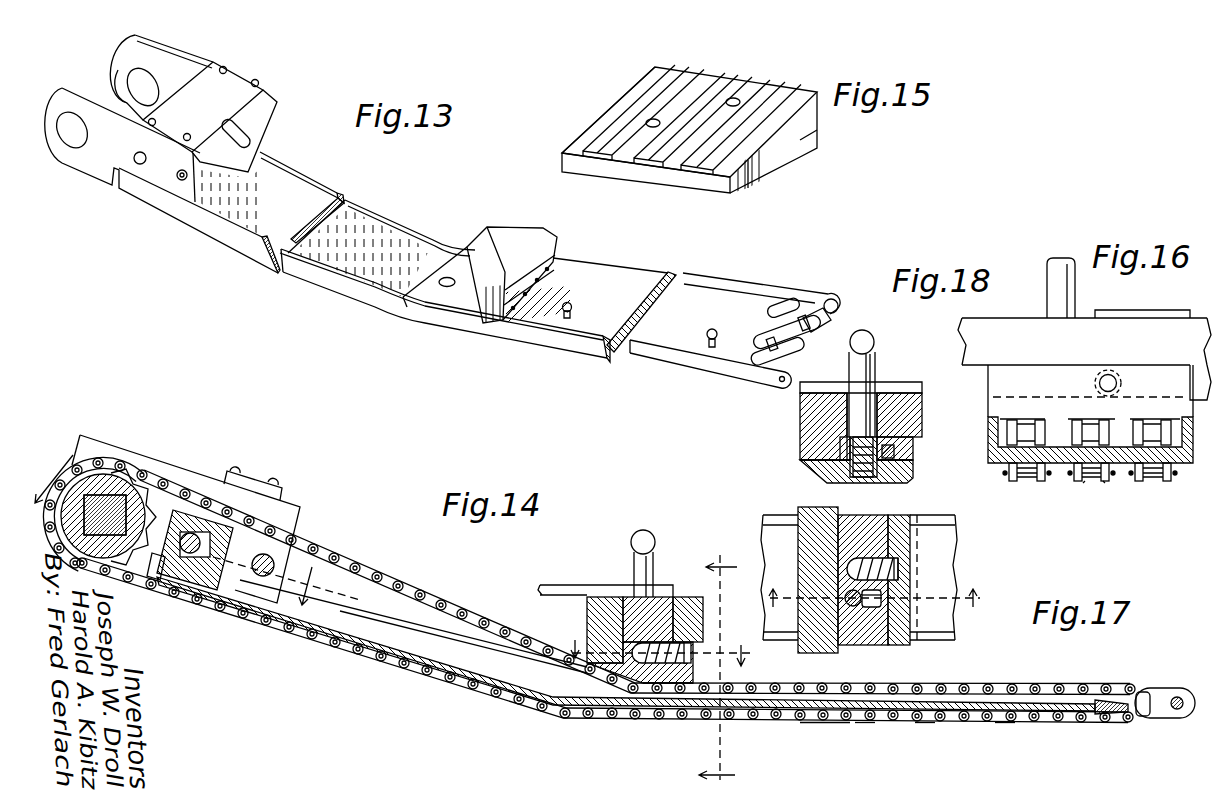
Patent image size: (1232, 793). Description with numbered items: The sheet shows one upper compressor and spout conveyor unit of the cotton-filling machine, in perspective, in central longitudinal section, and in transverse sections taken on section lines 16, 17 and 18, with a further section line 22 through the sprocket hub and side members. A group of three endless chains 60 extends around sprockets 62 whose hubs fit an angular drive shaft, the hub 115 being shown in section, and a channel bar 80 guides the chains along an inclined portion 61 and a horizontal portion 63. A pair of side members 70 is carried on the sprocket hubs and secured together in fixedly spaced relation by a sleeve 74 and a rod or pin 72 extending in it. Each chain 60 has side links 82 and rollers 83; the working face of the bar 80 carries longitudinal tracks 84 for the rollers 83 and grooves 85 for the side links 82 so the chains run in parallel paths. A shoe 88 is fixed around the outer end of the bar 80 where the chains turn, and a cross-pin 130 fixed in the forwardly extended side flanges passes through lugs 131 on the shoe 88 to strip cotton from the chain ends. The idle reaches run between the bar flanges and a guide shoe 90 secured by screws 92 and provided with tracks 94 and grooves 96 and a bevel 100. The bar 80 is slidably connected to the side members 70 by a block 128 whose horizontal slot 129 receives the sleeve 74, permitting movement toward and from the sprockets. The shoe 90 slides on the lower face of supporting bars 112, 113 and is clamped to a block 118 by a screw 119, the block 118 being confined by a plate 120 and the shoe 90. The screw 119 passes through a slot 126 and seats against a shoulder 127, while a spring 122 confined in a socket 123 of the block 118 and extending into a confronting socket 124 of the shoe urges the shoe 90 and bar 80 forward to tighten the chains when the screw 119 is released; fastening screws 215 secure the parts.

In FIG. 14, the section line 16- 16 is at (718, 663).
In FIG. 14, the section line 17- 17 is at (662, 651).
In FIG. 17, the section line 18- 18 is at (872, 600).
In FIG. 14, the section line 22- 22 is at (185, 530).
In FIG. 14, the endless chains 60 is at (395, 582).
In FIG. 13, the inclined portion 61 is at (393, 243).
In FIG. 14, the inclined portion 61 is at (345, 650).
In FIG. 14, the sprockets 62 is at (103, 475).
In FIG. 13, the horizontal portion 63 is at (647, 298).
In FIG. 14, the horizontal portion 63 is at (827, 722).
In FIG. 13, the side members 70 is at (278, 102).
In FIG. 14, the side members 70 is at (288, 505).
In FIG. 14, the pivot pin 72 is at (193, 533).
In FIG. 13, the sleeve 74 is at (250, 140).
In FIG. 14, the sleeve 74 is at (274, 559).
In FIG. 13, the channel bar 80 is at (362, 325).
In FIG. 16, the channel bar 80 is at (1012, 318).
In FIG. 14, the channel bar 80 is at (451, 665).
In FIG. 16, the side links 82 is at (1110, 427).
In FIG. 14, the side links 82 is at (863, 723).
In FIG. 16, the rollers 83 is at (1091, 478).
In FIG. 14, the rollers 83 is at (1003, 725).
In FIG. 16, the longitudinal tracks 84 is at (1026, 464).
In FIG. 16, the grooves 85 is at (1011, 464).
In FIG. 14, the grooves 85 is at (927, 725).
In FIG. 13, the shoe 88 is at (782, 305).
In FIG. 14, the shoe 88 is at (1133, 690).
In FIG. 13, the guide shoe 90 is at (498, 238).
In FIG. 15, the guide shoe 90 is at (615, 98).
In FIG. 16, the guide shoe 90 is at (1088, 373).
In FIG. 18, the guide shoe 90 is at (890, 478).
In FIG. 17, the guide shoe 90 is at (913, 583).
In FIG. 14, the guide shoe 90 is at (693, 670).
In FIG. 13, the screws 92 is at (452, 279).
In FIG. 15, the screws 92 is at (765, 162).
In FIG. 13, the tracks 94 is at (557, 243).
In FIG. 15, the tracks 94 is at (783, 88).
In FIG. 16, the tracks 94 is at (1027, 425).
In FIG. 13, the grooves 96 is at (538, 304).
In FIG. 15, the grooves 96 is at (643, 168).
In FIG. 18, the grooves 96 is at (853, 478).
In FIG. 13, the bevel 100 is at (413, 309).
In FIG. 15, the bevel 100 is at (572, 143).
In FIG. 18, the bevel 100 is at (813, 478).
In FIG. 14, the bevel 100 is at (630, 684).
In FIG. 18, the supporting bar 112 is at (807, 418).
In FIG. 17, the supporting bar 112 is at (807, 542).
In FIG. 14, the supporting bar 112 is at (588, 617).
In FIG. 18, the supporting bar 113 is at (922, 420).
In FIG. 17, the supporting bar 113 is at (900, 543).
In FIG. 14, the supporting bar 113 is at (698, 628).
In FIG. 14, the sprocket hub 115 is at (118, 490).
In FIG. 14, the block 118 is at (630, 607).
In FIG. 16, the screw 119 is at (1077, 292).
In FIG. 18, the screw 119 is at (875, 362).
In FIG. 17, the screw 119 is at (852, 606).
In FIG. 18, the plate 120 is at (915, 382).
In FIG. 16, the spring 122 is at (1122, 383).
In FIG. 17, the spring 122 is at (892, 565).
In FIG. 14, the spring 122 is at (653, 640).
In FIG. 17, the socket 123 is at (847, 568).
In FIG. 17, the socket 124 is at (903, 570).
In FIG. 14, the socket 124 is at (693, 647).
In FIG. 18, the slot 126 is at (878, 407).
In FIG. 17, the slot 126 is at (873, 603).
In FIG. 18, the shoulder 127 is at (858, 450).
In FIG. 13, the block 128 is at (175, 92).
In FIG. 14, the block 128 is at (180, 588).
In FIG. 14, the horizontal slot 129 is at (177, 576).
In FIG. 13, the cross-pin 130 is at (826, 300).
In FIG. 14, the cross-pin 130 is at (1177, 717).
In FIG. 13, the lugs 131 is at (823, 330).
In FIG. 14, the lugs 131 is at (1178, 690).
In FIG. 13, the screw 215 is at (573, 306).